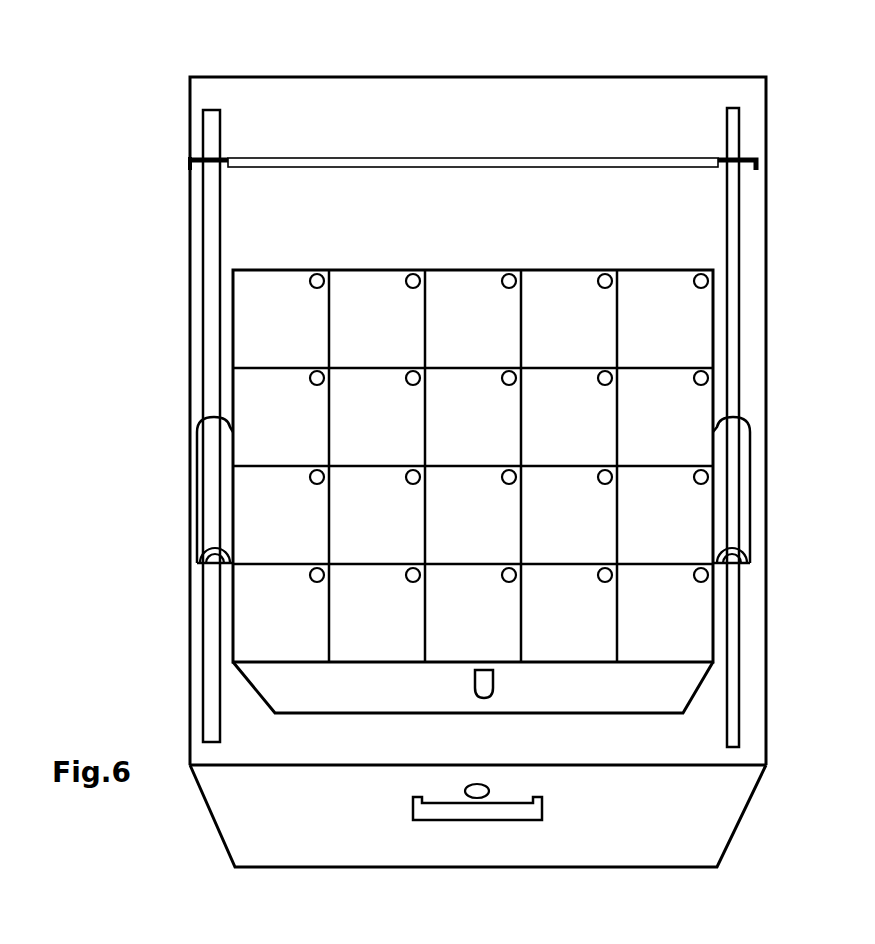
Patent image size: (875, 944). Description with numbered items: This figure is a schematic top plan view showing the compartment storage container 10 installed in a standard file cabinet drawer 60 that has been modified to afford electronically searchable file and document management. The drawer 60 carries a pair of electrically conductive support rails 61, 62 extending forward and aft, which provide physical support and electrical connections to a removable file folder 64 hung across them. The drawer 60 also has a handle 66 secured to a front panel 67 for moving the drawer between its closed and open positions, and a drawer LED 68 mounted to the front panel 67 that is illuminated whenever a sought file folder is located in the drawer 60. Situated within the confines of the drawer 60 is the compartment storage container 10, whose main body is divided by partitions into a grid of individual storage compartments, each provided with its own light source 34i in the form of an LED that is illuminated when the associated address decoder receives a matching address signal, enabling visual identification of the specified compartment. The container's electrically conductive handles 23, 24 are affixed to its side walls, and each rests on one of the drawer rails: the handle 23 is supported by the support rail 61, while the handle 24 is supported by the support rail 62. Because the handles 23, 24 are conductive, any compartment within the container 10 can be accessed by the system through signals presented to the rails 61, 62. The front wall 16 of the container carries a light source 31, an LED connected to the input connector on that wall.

The file cabinet drawer 60 is at (529, 77).
The support rail 61 is at (213, 128).
The support rail 62 is at (731, 237).
The removable file folder 64 is at (694, 155).
The compartment storage container 10 is at (464, 466).
The light source 34i is at (413, 580).
The handle 23 is at (212, 483).
The handle 24 is at (722, 430).
The front wall 16 is at (672, 687).
The light source 31 is at (493, 683).
The handle 66 is at (492, 813).
The front panel 67 is at (703, 797).
The drawer LED 68 is at (466, 787).